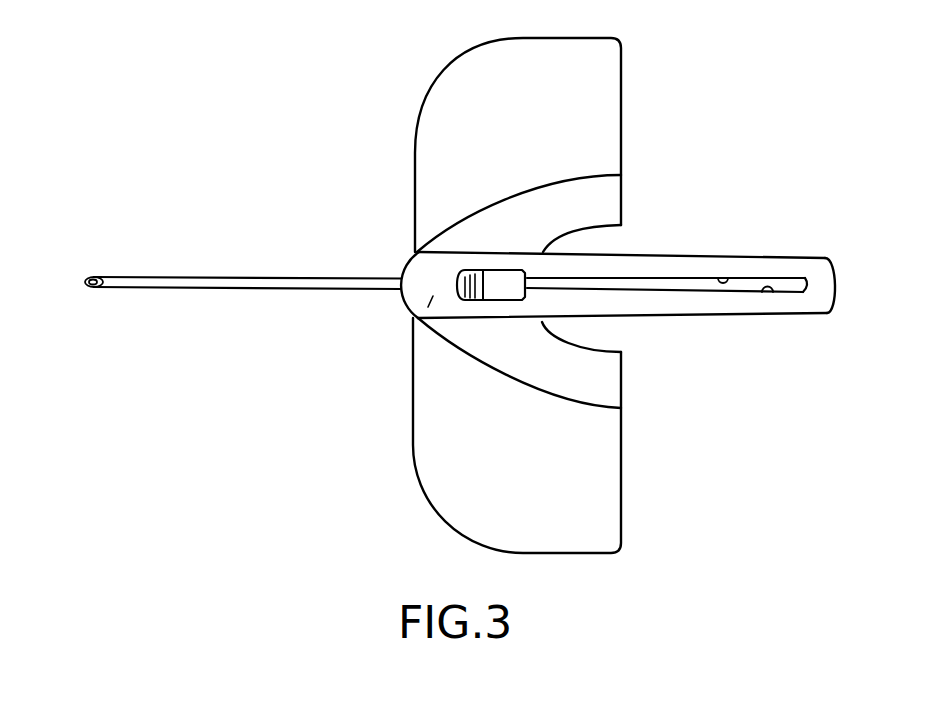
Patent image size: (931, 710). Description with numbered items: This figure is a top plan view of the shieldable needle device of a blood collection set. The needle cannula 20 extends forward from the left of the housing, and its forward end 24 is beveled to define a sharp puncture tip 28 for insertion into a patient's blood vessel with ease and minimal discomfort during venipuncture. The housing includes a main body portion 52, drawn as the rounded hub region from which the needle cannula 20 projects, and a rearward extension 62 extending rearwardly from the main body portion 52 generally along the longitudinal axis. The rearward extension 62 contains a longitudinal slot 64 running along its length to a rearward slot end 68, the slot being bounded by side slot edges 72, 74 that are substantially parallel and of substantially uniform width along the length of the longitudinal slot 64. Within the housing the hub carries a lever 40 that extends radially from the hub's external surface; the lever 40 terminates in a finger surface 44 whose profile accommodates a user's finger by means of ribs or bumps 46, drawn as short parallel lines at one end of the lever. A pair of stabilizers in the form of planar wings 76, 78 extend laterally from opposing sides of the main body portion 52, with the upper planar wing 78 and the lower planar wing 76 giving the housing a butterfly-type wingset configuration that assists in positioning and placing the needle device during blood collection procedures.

The needle cannula 20 is at (263, 277).
The forward end 24 is at (122, 263).
The puncture tip 28 is at (84, 284).
The lever 40 is at (502, 280).
The finger surface 44 is at (493, 282).
The ribs or bumps 46 is at (465, 280).
The main body portion 52 is at (433, 296).
The rearward extension 62 is at (816, 301).
The longitudinal slot 64 is at (695, 285).
The rearward slot end 68 is at (797, 284).
The side slot edge 72 is at (734, 276).
The side slot edge 74 is at (762, 291).
The planar wing 76 is at (472, 513).
The planar wing 78 is at (478, 78).